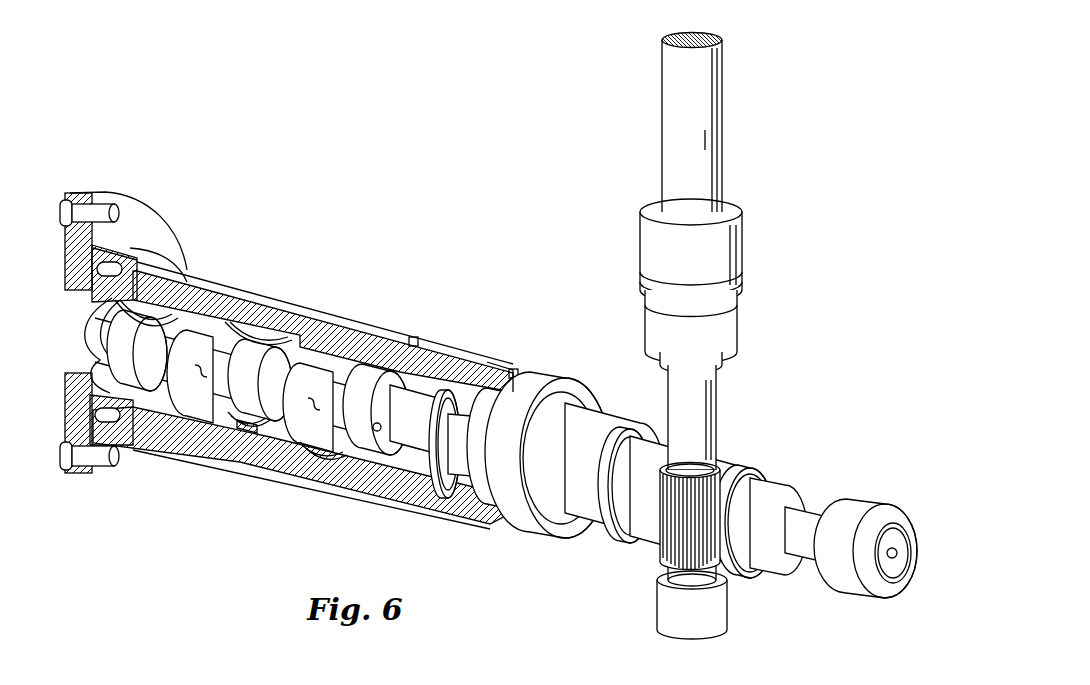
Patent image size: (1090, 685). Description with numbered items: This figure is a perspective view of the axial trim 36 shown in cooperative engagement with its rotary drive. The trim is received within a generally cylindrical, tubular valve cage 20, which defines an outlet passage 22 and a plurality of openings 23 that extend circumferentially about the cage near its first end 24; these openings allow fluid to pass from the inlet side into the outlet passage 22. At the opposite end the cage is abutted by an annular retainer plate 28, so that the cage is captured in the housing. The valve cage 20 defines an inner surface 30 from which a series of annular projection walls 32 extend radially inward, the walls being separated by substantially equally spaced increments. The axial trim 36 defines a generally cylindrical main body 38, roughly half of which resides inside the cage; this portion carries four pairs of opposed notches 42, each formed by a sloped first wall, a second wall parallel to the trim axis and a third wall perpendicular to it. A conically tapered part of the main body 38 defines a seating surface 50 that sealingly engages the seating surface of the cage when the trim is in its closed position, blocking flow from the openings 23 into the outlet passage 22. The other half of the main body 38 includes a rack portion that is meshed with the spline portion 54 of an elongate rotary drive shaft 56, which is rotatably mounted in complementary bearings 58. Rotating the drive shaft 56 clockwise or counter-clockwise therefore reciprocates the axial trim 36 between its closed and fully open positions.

The valve cage 20 is at (243, 272).
The outlet passage 22 is at (370, 495).
The openings 23 is at (458, 352).
The first end 24 is at (533, 378).
The retainer plate 28 is at (67, 261).
The inner surface 30 is at (265, 460).
The projection walls 32 is at (95, 304).
The axial trim 36 is at (565, 542).
The main body 38 is at (570, 495).
The notches 42 is at (185, 280).
The seating surface 50 is at (400, 480).
The spline portion 54 is at (663, 545).
The drive shaft 56 is at (738, 130).
The bearings 58 is at (741, 253).